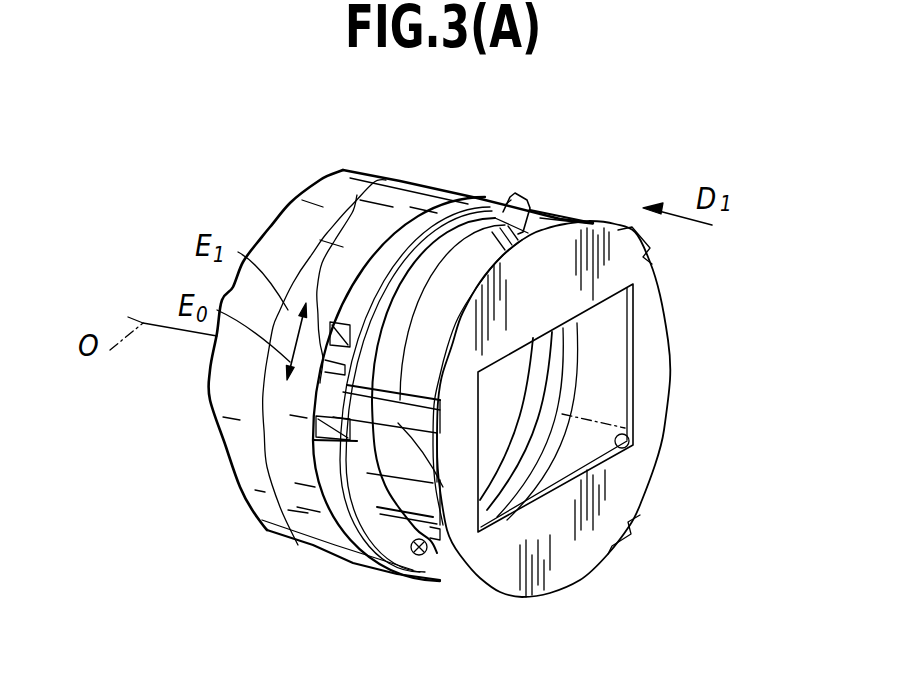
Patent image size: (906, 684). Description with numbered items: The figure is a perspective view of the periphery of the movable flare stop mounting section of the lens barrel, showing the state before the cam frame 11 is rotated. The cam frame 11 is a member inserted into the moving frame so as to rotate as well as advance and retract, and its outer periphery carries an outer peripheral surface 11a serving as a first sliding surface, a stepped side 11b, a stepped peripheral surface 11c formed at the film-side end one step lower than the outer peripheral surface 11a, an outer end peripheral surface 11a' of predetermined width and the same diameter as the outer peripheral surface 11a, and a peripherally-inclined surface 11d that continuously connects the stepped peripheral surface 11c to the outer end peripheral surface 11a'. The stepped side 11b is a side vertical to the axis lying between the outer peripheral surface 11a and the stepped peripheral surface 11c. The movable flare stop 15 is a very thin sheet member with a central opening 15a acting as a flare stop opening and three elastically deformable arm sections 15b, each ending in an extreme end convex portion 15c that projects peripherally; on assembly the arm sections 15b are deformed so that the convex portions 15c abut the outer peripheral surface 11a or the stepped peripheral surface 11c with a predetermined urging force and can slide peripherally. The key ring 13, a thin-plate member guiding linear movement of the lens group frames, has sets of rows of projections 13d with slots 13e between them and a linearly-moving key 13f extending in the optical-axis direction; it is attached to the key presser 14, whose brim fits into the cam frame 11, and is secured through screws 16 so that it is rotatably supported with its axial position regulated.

The cam frame 11 is at (347, 190).
The outer peripheral surface 11a is at (245, 367).
The outer end peripheral surface 11a' is at (253, 362).
The stepped side 11b is at (447, 200).
The stepped peripheral surface 11c is at (403, 237).
The peripherally-inclined surface 11d is at (343, 305).
The key ring 13 is at (487, 210).
The projections 13d is at (533, 193).
The slots 13e is at (357, 353).
The linearly-moving key 13f is at (480, 573).
The key presser 14 is at (512, 402).
The movable flare stop 15 is at (620, 490).
The opening 15a is at (641, 441).
The arm sections 15b is at (470, 483).
The extreme end convex portion 15c is at (317, 397).
The screws 16 is at (420, 557).